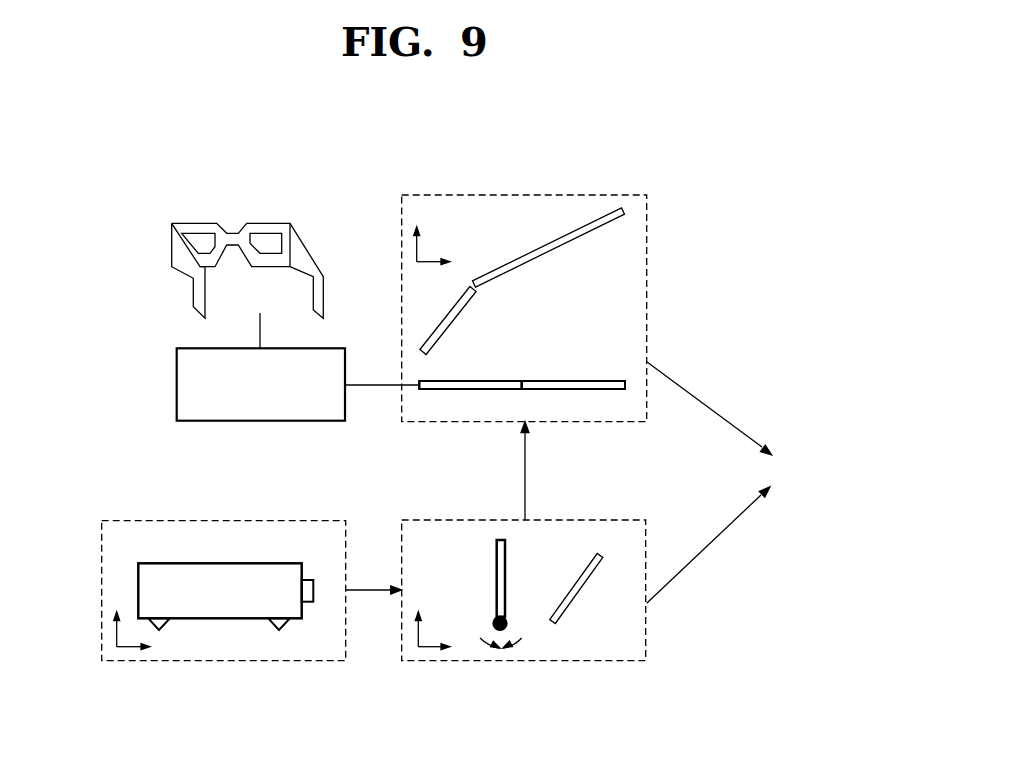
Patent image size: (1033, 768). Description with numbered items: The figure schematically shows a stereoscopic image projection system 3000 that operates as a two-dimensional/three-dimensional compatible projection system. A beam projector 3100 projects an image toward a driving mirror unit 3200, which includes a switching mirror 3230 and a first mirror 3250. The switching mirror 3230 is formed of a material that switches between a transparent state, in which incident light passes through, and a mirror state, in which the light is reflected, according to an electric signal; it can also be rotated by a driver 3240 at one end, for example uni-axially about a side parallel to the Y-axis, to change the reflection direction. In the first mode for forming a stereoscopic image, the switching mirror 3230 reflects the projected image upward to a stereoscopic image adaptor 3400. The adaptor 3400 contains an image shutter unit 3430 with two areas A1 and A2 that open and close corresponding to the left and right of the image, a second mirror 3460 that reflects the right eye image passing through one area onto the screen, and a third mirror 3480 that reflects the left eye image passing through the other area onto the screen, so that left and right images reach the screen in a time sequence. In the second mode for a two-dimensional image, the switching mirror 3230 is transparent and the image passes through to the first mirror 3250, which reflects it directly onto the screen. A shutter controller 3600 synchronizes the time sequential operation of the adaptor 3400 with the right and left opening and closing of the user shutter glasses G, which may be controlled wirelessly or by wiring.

The stereoscopic image projection system 3000 is at (726, 206).
The user shutter glasses G is at (268, 223).
The shutter controller 3600 is at (177, 386).
The stereoscopic image adaptor 3400 is at (448, 194).
The third mirror 3480 is at (568, 233).
The second mirror 3460 is at (440, 333).
The image shutter unit 3430 is at (447, 403).
The area A1 is at (576, 381).
The area A2 is at (473, 381).
The beam projector 3100 is at (240, 662).
The driving mirror unit 3200 is at (558, 662).
The switching mirror 3230 is at (495, 553).
The driver 3240 is at (507, 620).
The first mirror 3250 is at (582, 595).